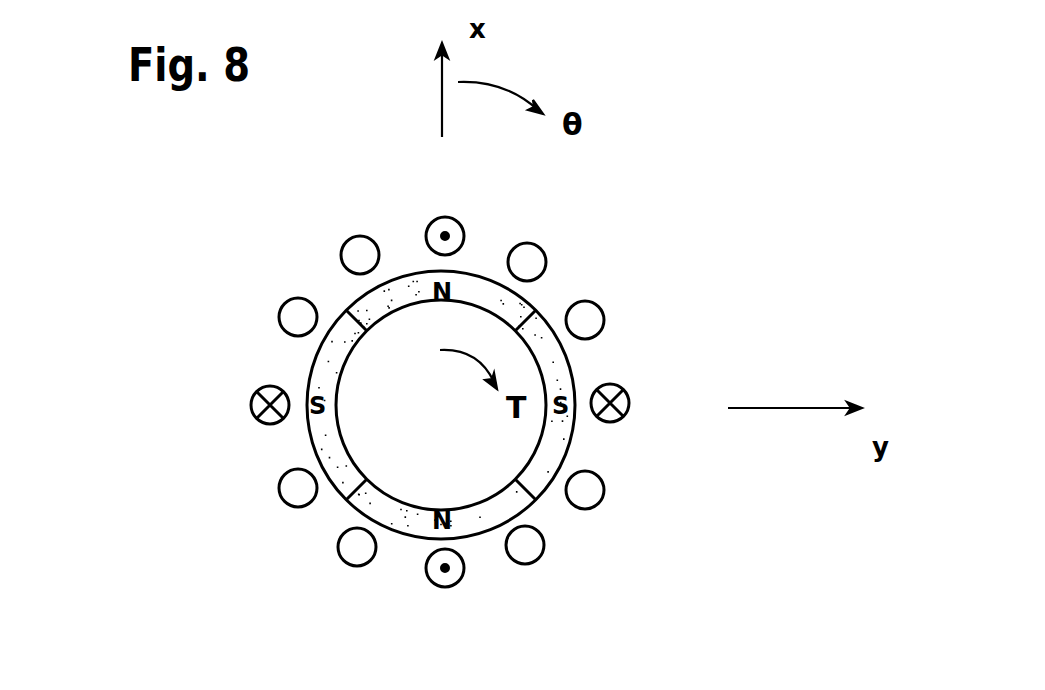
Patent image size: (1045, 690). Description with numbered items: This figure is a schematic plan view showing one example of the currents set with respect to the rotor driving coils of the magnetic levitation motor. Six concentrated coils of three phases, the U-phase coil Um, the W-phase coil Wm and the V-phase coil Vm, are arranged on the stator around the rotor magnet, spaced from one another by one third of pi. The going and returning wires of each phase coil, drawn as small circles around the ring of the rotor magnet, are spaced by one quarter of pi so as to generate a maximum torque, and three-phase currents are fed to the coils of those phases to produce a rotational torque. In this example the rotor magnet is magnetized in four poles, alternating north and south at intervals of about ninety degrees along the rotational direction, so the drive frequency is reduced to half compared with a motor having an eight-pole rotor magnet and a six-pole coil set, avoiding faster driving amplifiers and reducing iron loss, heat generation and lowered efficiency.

The U-phase coil Um is at (448, 405).
The V-phase coil Vm is at (443, 420).
The W-phase coil Wm is at (443, 401).